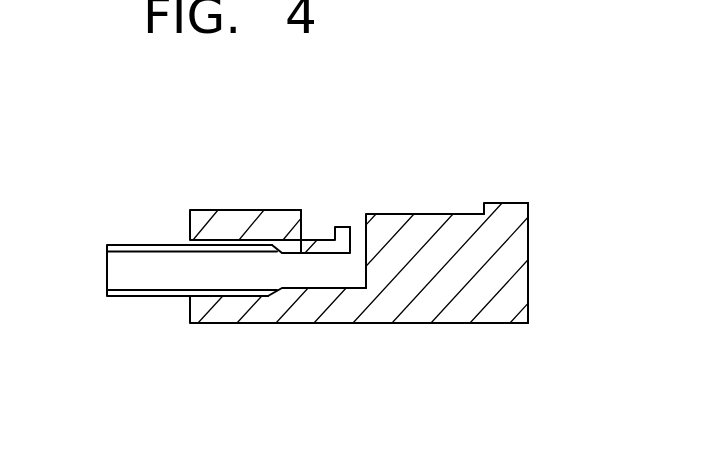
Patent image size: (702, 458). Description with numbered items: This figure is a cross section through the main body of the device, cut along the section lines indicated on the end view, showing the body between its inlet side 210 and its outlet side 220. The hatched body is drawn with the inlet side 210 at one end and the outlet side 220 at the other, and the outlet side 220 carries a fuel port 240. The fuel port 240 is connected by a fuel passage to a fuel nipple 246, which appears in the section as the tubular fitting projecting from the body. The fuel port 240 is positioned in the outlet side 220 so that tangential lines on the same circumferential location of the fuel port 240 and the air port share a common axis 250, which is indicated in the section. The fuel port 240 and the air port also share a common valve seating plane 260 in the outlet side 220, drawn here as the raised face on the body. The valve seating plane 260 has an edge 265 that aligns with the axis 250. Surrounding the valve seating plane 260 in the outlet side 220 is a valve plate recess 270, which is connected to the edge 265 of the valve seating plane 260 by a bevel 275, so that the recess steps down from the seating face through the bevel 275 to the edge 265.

The inlet side 210 is at (202, 325).
The outlet side 220 is at (201, 212).
The fuel port 240 is at (364, 215).
The fuel nipple 246 is at (125, 297).
The axis 250 is at (354, 232).
The valve seating plane 260 is at (469, 212).
The edge 265 is at (350, 227).
The valve plate recess 270 is at (304, 213).
The bevel 275 is at (334, 236).